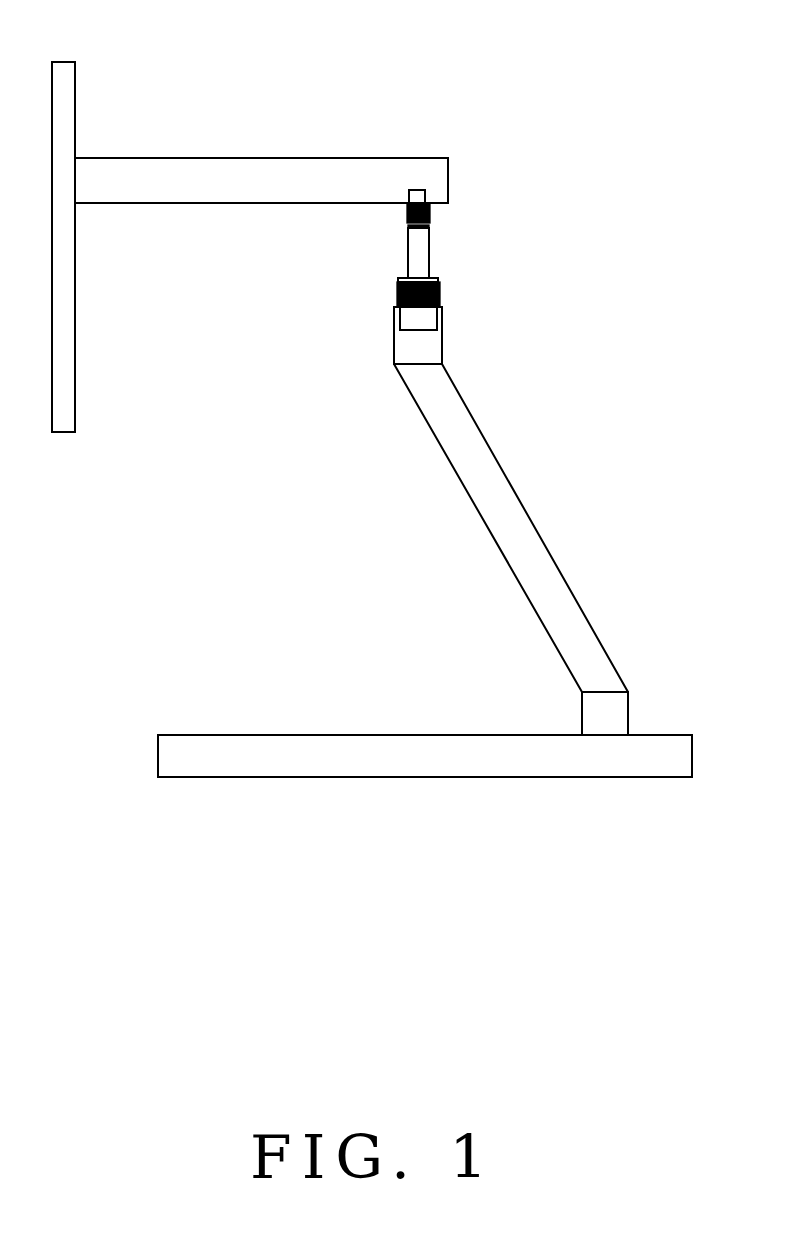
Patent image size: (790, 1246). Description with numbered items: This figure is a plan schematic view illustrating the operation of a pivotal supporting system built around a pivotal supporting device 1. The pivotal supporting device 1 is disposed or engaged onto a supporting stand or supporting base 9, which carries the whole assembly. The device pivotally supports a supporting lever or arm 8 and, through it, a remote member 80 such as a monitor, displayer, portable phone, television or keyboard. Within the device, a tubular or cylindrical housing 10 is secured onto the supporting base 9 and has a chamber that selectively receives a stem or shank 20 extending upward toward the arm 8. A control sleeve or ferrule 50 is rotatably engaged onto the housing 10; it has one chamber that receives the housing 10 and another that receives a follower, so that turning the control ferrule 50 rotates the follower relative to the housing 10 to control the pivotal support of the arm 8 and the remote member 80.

The pivotal supporting device 1 is at (444, 270).
The supporting arm 8 is at (168, 185).
The supporting base 9 is at (552, 594).
The housing 10 is at (408, 319).
The shank 20 is at (418, 243).
The control ferrule 50 is at (440, 292).
The remote member 80 is at (67, 97).